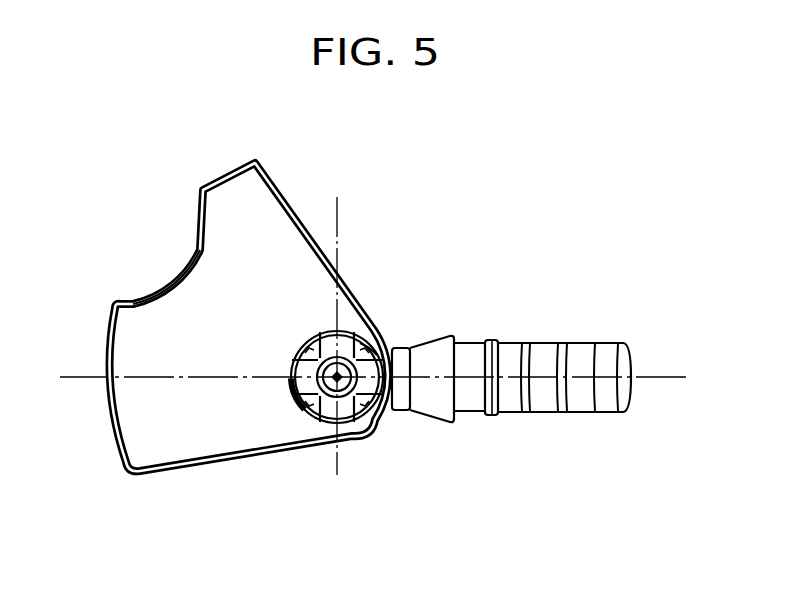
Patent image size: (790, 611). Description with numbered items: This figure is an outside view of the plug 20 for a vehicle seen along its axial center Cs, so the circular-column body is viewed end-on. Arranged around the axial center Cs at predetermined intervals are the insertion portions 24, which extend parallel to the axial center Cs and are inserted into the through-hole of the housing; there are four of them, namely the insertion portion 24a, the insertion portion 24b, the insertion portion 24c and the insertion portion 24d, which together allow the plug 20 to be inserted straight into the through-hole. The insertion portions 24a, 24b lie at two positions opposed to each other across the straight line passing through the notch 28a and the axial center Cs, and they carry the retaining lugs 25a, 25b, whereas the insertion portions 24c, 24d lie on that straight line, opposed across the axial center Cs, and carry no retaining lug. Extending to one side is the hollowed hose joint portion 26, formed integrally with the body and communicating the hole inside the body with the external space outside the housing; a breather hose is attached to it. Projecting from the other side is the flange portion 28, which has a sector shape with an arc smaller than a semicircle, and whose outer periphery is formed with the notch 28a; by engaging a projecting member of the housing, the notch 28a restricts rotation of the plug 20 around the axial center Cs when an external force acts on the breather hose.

The plug for a vehicle 20 is at (375, 341).
The insertion portions 24 is at (344, 442).
The insertion portion 24a is at (308, 398).
The insertion portion 24b is at (395, 350).
The insertion portion 24c is at (300, 348).
The insertion portion 24d is at (363, 398).
The retaining lug 25a is at (292, 408).
The retaining lug 25b is at (362, 353).
The hose joint portion 26 is at (542, 358).
The flange portion 28 is at (237, 197).
The notch 28a is at (193, 258).
The axial center Cs is at (340, 322).